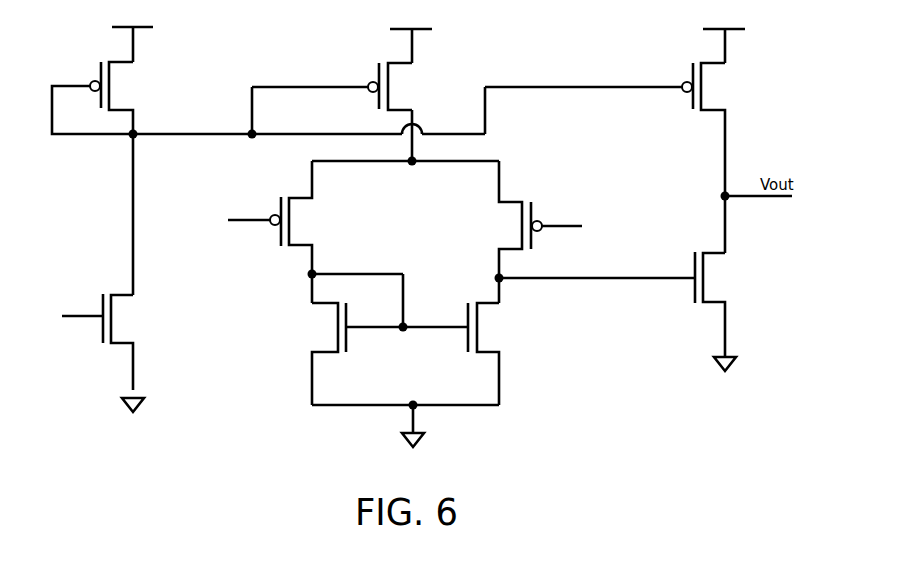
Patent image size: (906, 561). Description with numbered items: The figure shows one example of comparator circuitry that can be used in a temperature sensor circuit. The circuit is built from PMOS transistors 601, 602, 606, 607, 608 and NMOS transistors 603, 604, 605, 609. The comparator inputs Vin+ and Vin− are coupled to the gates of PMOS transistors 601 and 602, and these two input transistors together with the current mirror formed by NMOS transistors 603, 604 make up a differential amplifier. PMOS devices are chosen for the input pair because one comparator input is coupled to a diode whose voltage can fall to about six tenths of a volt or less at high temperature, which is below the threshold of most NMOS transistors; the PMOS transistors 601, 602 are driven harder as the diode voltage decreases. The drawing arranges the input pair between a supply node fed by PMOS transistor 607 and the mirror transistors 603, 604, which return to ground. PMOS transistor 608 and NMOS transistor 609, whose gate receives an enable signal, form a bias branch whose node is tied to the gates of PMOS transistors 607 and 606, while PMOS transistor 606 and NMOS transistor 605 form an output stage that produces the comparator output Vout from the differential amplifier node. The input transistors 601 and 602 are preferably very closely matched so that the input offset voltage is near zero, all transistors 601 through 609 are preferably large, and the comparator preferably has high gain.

The PMOS transistor 601 is at (278, 202).
The PMOS transistor 602 is at (533, 236).
The NMOS transistor 603 is at (347, 342).
The NMOS transistor 604 is at (467, 342).
The NMOS transistor 605 is at (692, 260).
The PMOS transistor 606 is at (690, 72).
The PMOS transistor 607 is at (377, 71).
The PMOS transistor 608 is at (98, 72).
The NMOS transistor 609 is at (100, 333).